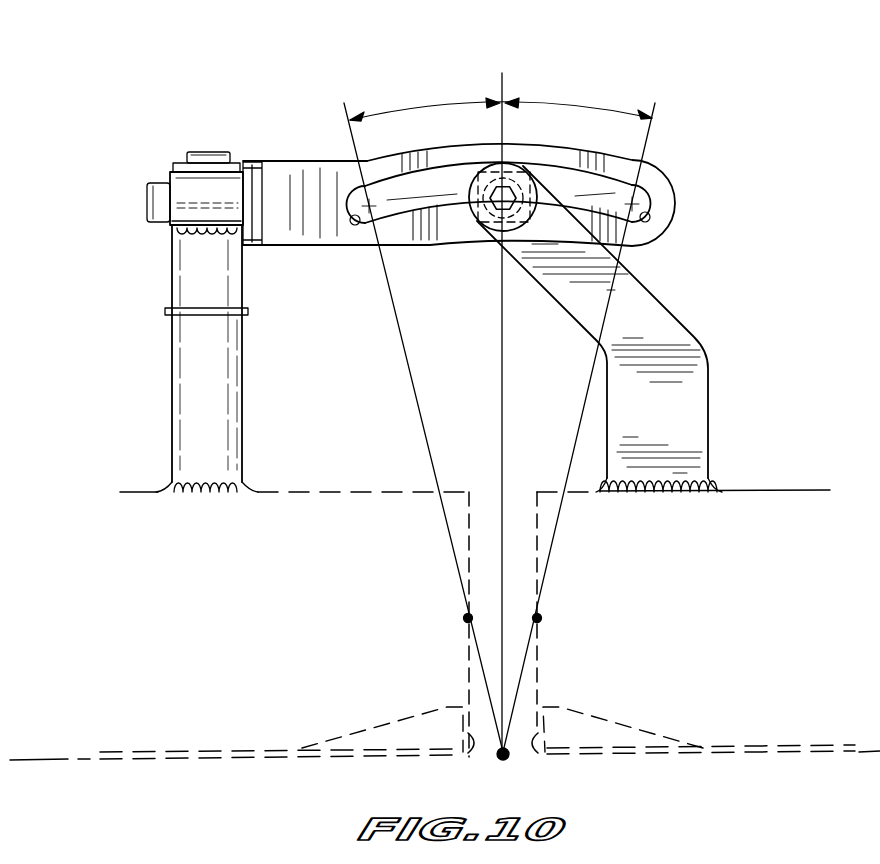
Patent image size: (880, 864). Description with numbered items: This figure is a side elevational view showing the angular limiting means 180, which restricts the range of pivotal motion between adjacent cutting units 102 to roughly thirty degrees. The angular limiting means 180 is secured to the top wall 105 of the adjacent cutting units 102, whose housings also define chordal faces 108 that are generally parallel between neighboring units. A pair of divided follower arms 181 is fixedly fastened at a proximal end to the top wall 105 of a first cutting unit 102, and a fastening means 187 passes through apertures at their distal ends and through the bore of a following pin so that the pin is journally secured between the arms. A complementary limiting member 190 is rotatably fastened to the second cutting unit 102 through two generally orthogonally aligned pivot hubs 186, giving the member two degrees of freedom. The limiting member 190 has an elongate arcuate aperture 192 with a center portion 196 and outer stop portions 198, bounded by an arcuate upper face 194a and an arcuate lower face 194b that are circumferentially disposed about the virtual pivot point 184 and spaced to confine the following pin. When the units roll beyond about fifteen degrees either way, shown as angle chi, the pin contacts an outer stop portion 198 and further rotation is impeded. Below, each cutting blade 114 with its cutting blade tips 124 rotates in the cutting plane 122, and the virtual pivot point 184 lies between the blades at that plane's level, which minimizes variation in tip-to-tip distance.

The angular limiting means 180 is at (263, 107).
The limiting member 190 is at (292, 163).
The pivot hub 186 is at (203, 260).
The arcuate aperture 192 is at (613, 190).
The center portion 196 is at (437, 193).
The arcuate upper face 194a is at (597, 180).
The arcuate lower face 194b is at (408, 223).
The outer stop portion 198 is at (352, 232).
The fastening means 187 is at (520, 225).
The divided follower arm 181 is at (670, 312).
The top wall 105 is at (133, 492).
The cutting unit 102 is at (268, 632).
The chordal face 108 is at (470, 662).
The cutting plane 122 is at (42, 759).
The cutting blade 114 is at (268, 760).
The cutting blade tip 124 is at (462, 762).
The virtual pivot point 184 is at (506, 760).